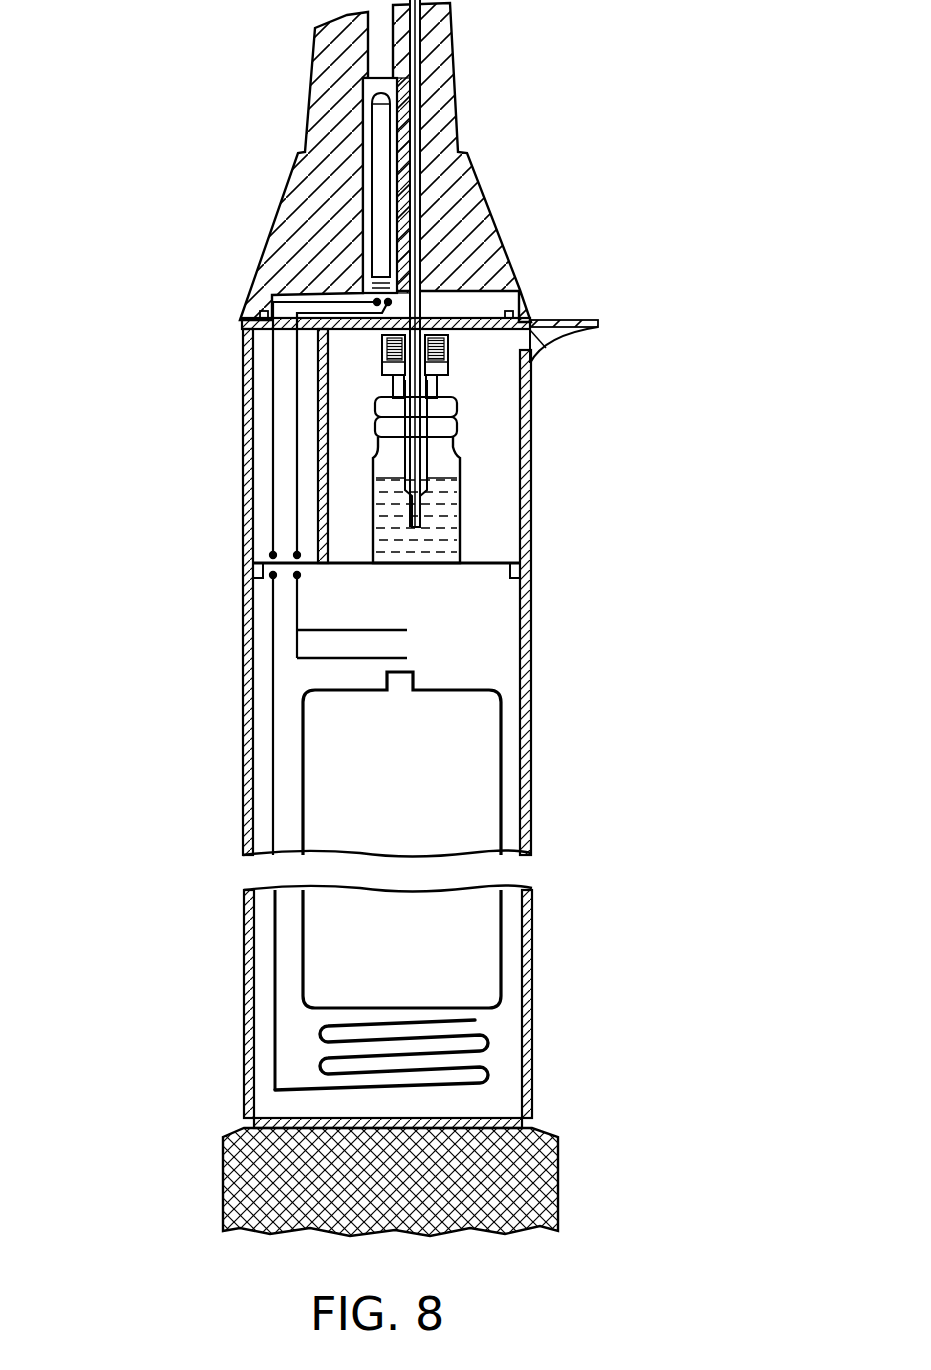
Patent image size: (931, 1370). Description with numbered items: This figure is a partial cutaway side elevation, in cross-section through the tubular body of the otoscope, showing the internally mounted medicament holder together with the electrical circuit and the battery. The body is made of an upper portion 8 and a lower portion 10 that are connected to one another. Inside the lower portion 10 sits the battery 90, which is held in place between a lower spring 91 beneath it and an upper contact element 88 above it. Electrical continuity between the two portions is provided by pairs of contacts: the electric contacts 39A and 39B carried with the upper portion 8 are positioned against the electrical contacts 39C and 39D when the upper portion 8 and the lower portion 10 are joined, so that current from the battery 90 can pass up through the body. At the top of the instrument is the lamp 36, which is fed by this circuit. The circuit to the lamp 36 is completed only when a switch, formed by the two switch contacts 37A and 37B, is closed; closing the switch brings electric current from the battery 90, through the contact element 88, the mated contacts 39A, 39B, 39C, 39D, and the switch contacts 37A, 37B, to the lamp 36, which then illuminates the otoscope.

The lamp 36 is at (386, 100).
The switch contact 37A is at (377, 300).
The switch contact 37B is at (384, 318).
The upper portion 8 is at (243, 450).
The electric contact 39A is at (297, 555).
The electric contact 39B is at (273, 555).
The electrical contact 39C is at (273, 575).
The electrical contact 39D is at (297, 575).
The lower portion 10 is at (243, 780).
The upper contact element 88 is at (392, 656).
The battery 90 is at (477, 762).
The lower spring 91 is at (485, 1043).